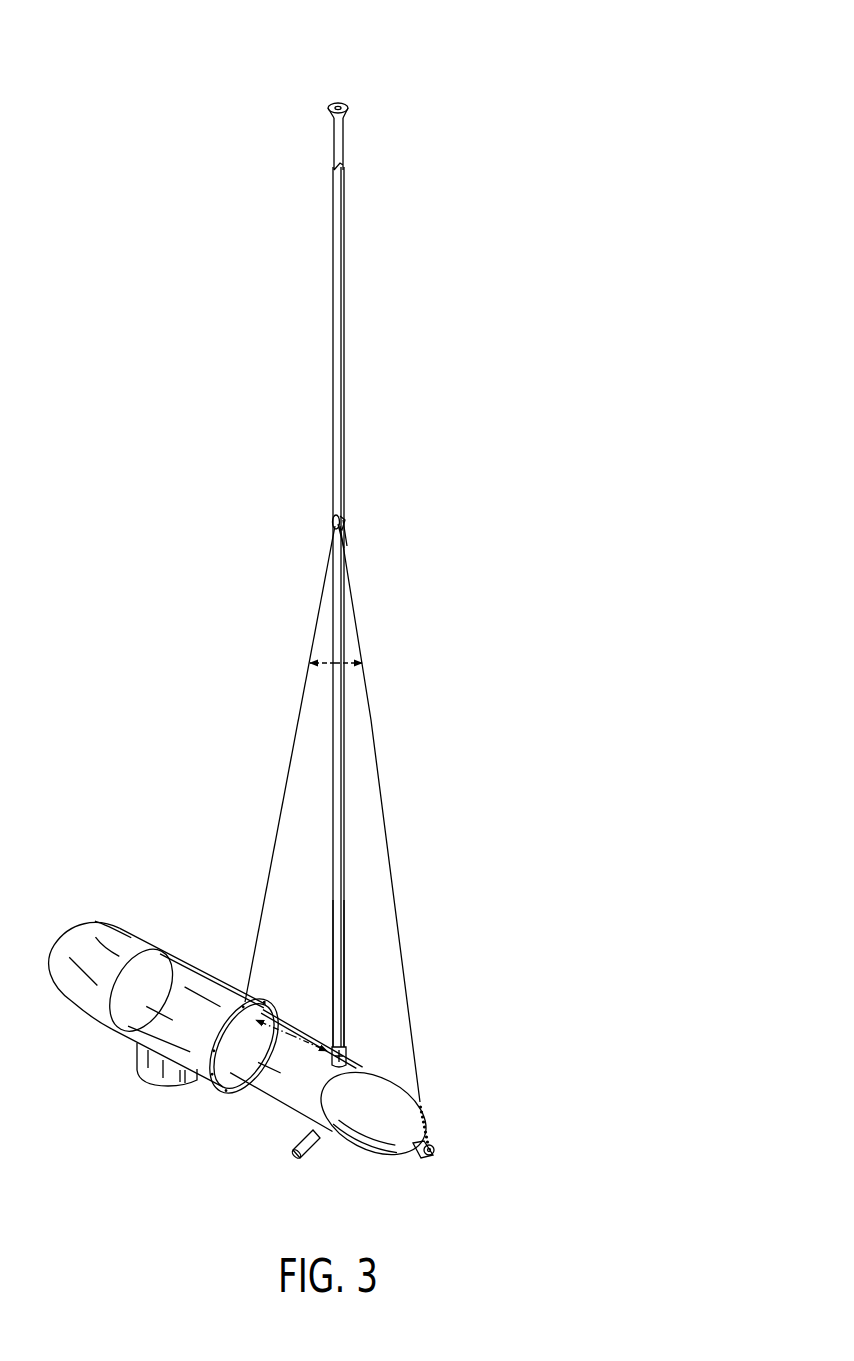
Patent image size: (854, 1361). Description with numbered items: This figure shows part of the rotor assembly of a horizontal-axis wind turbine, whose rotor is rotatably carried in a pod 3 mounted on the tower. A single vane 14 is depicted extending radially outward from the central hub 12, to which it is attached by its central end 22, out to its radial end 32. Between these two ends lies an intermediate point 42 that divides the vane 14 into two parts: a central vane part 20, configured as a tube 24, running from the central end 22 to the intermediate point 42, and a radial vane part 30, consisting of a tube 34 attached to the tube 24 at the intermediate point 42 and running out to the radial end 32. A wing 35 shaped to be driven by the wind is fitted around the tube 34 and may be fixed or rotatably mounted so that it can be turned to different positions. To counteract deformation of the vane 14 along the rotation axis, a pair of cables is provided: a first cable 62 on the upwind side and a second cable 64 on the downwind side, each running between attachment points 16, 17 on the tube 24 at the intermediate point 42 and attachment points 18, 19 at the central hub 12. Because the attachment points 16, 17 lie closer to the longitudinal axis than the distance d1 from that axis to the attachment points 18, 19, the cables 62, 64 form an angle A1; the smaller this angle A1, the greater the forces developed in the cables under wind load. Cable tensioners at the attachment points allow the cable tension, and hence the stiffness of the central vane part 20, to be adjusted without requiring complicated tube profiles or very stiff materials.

The pod 3 is at (163, 967).
The central hub 12 is at (360, 1145).
The vane 14 is at (138, 493).
The attachment point 16 is at (334, 522).
The attachment point 17 is at (342, 517).
The attachment point 18 is at (224, 998).
The attachment point 19 is at (434, 1154).
The central vane part 20 is at (205, 595).
The central end 22 is at (346, 1053).
The tube 24 is at (341, 968).
The radial vane part 30 is at (238, 345).
The radial end 32 is at (343, 98).
The tube 34 is at (339, 143).
The wing 35 is at (338, 350).
The intermediate point 42 is at (343, 533).
The first cable 62 is at (296, 724).
The second cable 64 is at (374, 731).
The angle A1 is at (328, 662).
The distance d1 is at (291, 1041).